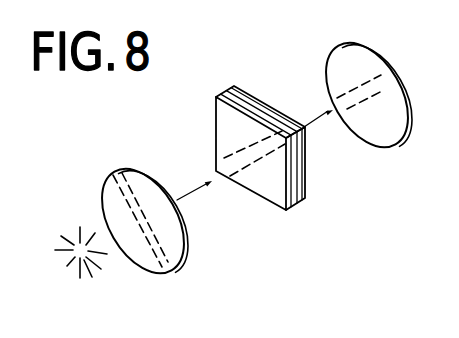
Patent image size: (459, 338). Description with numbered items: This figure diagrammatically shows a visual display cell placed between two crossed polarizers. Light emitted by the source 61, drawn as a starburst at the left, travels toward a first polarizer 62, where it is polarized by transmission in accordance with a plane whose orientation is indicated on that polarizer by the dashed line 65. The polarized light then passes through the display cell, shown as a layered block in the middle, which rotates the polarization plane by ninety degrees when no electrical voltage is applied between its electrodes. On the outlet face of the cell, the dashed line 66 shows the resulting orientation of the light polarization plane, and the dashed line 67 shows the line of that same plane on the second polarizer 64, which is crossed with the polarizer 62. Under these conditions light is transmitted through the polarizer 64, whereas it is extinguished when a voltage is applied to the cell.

The source 61 is at (70, 263).
The polarizer 62 is at (106, 200).
The polarizer 64 is at (340, 61).
The polarization direction 65 is at (156, 243).
The line of the light polarization plane on the outlet face of the cell 66 is at (222, 158).
The line of the polarization plane on the polarizer 67 is at (360, 102).